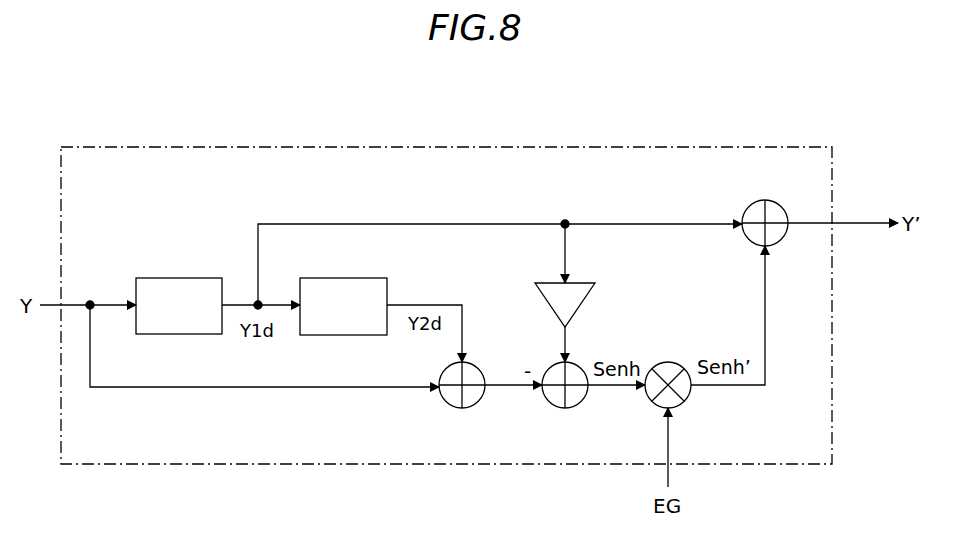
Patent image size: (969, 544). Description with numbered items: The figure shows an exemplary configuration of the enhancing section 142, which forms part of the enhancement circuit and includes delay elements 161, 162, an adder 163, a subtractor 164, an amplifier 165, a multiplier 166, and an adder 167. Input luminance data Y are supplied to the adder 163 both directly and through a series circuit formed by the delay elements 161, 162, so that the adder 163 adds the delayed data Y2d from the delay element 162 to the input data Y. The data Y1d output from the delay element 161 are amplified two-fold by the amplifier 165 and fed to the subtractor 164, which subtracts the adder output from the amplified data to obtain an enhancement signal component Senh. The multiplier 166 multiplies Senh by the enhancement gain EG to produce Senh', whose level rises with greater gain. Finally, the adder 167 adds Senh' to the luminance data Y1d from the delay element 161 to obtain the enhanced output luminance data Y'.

The enhancing section 142 is at (390, 96).
The delay element 161 is at (172, 277).
The delay element 162 is at (340, 277).
The adder 163 is at (460, 409).
The subtractor 164 is at (563, 409).
The amplifier 165 is at (592, 281).
The multiplier 166 is at (667, 361).
The adder 167 is at (764, 199).